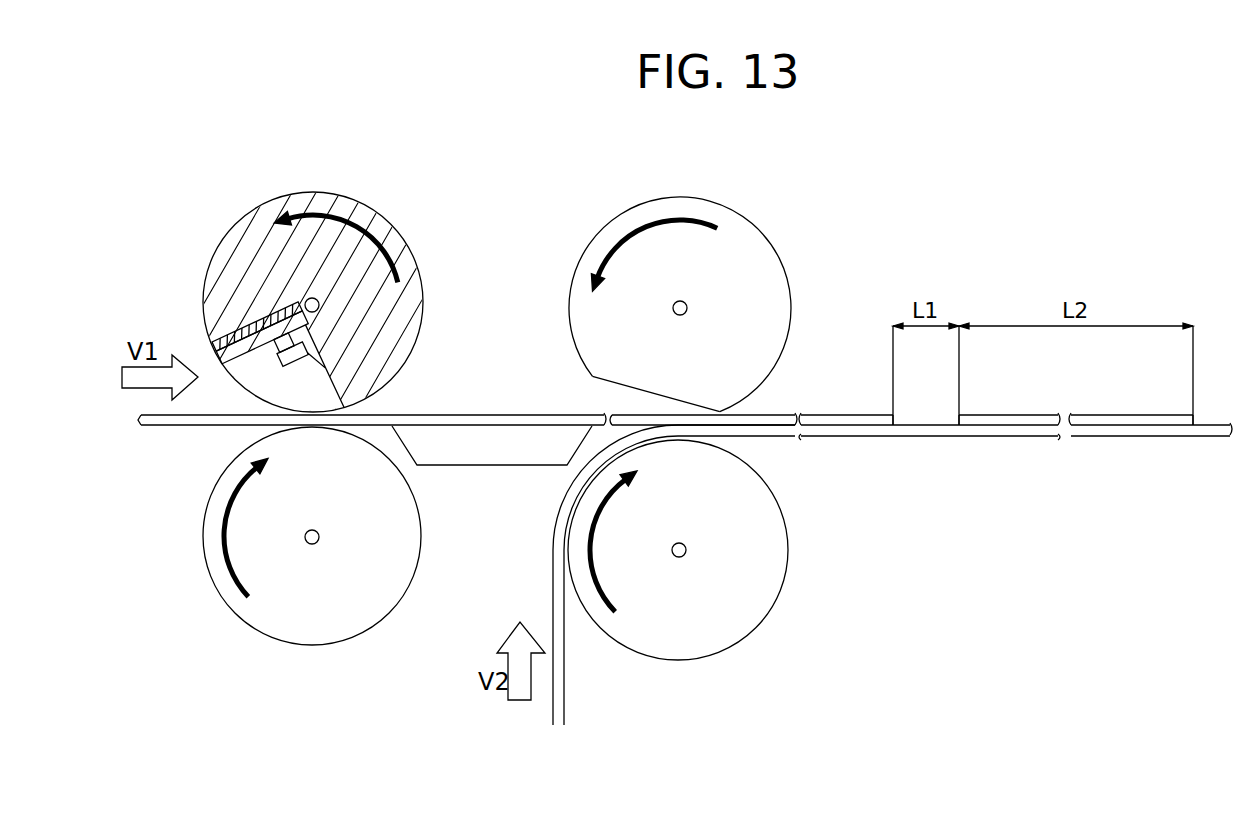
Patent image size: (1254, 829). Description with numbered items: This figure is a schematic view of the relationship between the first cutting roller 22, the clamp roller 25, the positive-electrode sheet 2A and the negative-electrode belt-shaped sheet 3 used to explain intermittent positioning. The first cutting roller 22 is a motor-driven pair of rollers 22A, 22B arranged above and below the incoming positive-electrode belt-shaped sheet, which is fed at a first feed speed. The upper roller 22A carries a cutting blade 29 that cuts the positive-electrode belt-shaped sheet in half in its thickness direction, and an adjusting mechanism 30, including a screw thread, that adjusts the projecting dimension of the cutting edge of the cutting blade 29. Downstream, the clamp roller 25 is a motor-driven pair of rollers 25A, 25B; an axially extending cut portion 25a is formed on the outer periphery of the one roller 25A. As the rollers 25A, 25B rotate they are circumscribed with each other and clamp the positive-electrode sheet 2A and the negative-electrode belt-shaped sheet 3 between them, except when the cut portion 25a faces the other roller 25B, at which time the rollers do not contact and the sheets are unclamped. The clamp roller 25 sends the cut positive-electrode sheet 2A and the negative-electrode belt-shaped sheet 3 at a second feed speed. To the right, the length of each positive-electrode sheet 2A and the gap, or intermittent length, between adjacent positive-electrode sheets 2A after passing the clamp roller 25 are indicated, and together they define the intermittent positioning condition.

The first cutting roller 22 is at (308, 297).
The roller 22A is at (243, 247).
The roller 22B is at (308, 645).
The cutting blade 29 is at (203, 353).
The adjusting mechanism 30 is at (343, 364).
The clamp roller 25 is at (678, 272).
The roller 25A is at (758, 274).
The cut portion 25a is at (612, 388).
The roller 25B is at (687, 660).
The positive-electrode sheet 2A is at (830, 415).
The negative-electrode belt-shaped sheet 3 is at (852, 437).